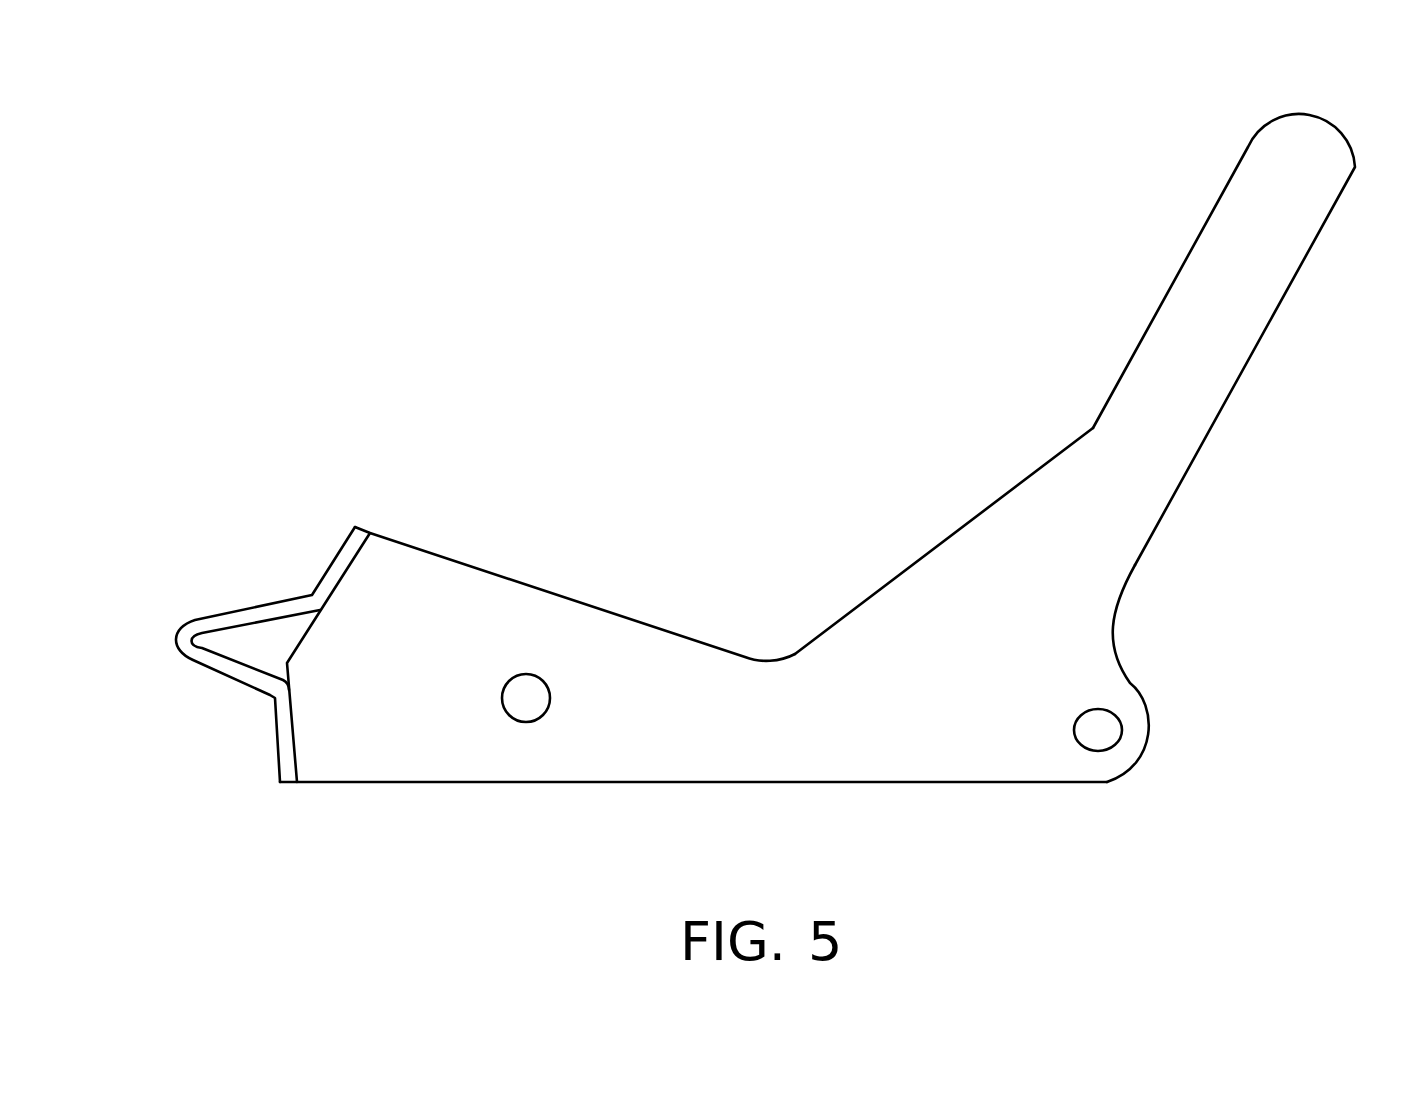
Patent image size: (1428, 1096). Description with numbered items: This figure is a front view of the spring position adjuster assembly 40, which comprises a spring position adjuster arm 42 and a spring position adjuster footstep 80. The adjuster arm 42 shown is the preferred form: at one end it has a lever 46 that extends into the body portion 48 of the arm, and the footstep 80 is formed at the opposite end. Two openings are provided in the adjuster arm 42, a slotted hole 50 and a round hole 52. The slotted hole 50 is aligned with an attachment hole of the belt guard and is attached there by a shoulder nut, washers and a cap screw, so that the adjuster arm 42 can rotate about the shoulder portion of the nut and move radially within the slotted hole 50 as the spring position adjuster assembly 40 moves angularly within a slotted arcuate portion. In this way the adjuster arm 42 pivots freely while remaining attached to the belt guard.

The spring position adjuster assembly 40 is at (780, 340).
The spring position adjuster arm 42 is at (632, 613).
The lever 46 is at (1248, 150).
The body portion 48 is at (852, 658).
The slotted hole 50 is at (1108, 720).
The round hole 52 is at (522, 697).
The spring position adjuster footstep 80 is at (192, 623).